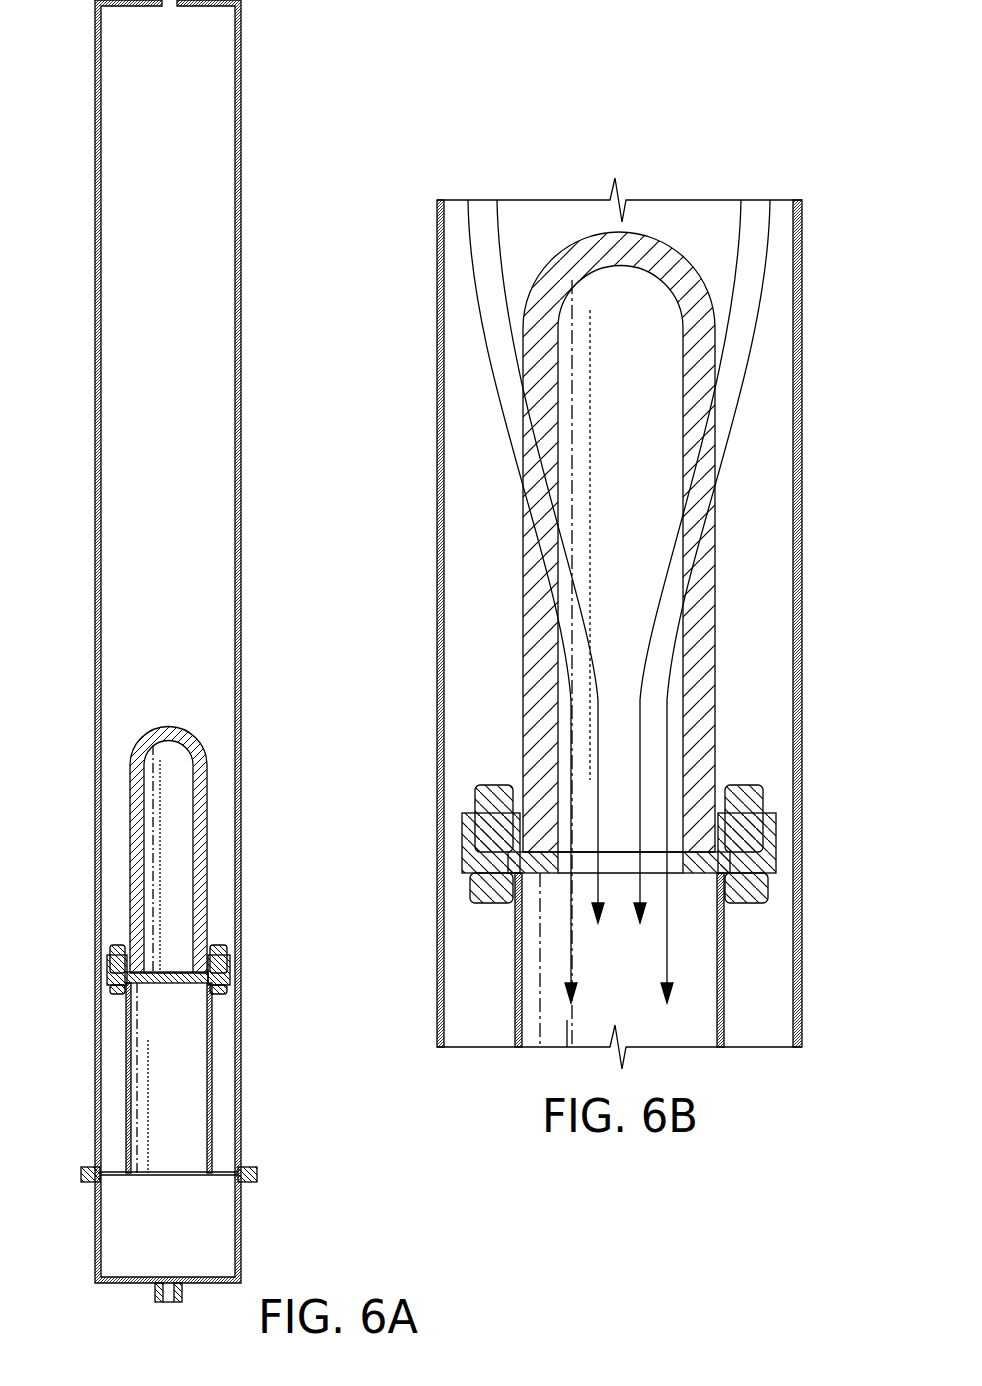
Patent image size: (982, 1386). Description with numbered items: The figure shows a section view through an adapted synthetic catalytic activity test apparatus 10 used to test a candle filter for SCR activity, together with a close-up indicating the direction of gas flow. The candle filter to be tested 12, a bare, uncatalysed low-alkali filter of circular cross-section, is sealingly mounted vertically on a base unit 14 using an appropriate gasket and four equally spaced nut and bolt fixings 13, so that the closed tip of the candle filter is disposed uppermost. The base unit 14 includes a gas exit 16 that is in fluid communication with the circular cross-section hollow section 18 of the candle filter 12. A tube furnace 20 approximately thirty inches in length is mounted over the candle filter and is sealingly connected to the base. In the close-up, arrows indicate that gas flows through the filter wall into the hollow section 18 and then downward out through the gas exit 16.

In FIG. 6A, the synthetic catalytic activity test apparatus 10 is at (169, 679).
In FIG. 6A, the candle filter 12 is at (214, 758).
In FIG. 6B, the candle filter 12 is at (715, 298).
In FIG. 6A, the nut and bolt fixings 13 is at (107, 972).
In FIG. 6B, the nut and bolt fixings 13 is at (462, 843).
In FIG. 6A, the base unit 14 is at (219, 1040).
In FIG. 6B, the base unit 14 is at (724, 935).
In FIG. 6A, the gas exit 16 is at (169, 1314).
In FIG. 6A, the hollow section 18 is at (162, 750).
In FIG. 6B, the hollow section 18 is at (690, 330).
In FIG. 6A, the tube furnace 20 is at (95, 103).
In FIG. 6B, the tube furnace 20 is at (802, 238).